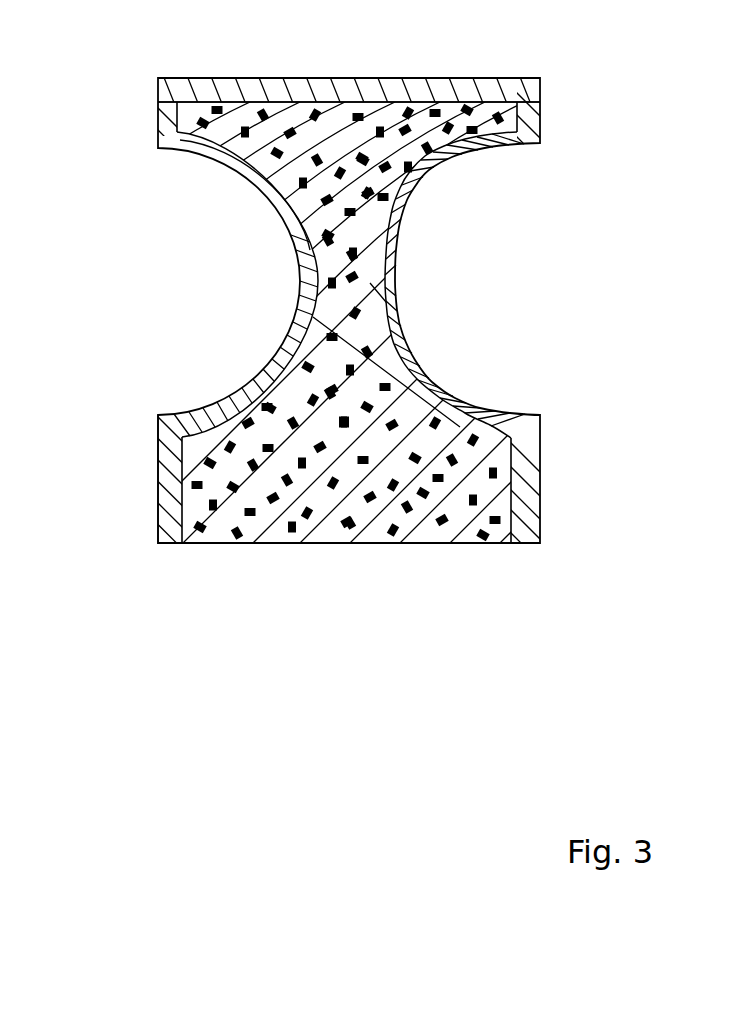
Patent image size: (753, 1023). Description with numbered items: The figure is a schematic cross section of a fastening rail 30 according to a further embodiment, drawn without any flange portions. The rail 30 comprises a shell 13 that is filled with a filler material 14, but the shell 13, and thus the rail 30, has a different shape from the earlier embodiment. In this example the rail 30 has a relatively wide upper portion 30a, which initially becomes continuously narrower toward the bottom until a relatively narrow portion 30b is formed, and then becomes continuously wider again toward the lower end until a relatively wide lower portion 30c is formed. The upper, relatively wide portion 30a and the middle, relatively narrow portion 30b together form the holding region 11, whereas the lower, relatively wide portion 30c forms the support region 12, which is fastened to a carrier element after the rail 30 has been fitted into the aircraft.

The fastening rail 30 is at (92, 25).
The upper portion 30a is at (561, 91).
The narrow portion 30b is at (435, 278).
The lower portion 30c is at (564, 519).
The shell 13 is at (414, 95).
The holding region 11 is at (235, 284).
The support region 12 is at (130, 479).
The filler material 14 is at (328, 509).